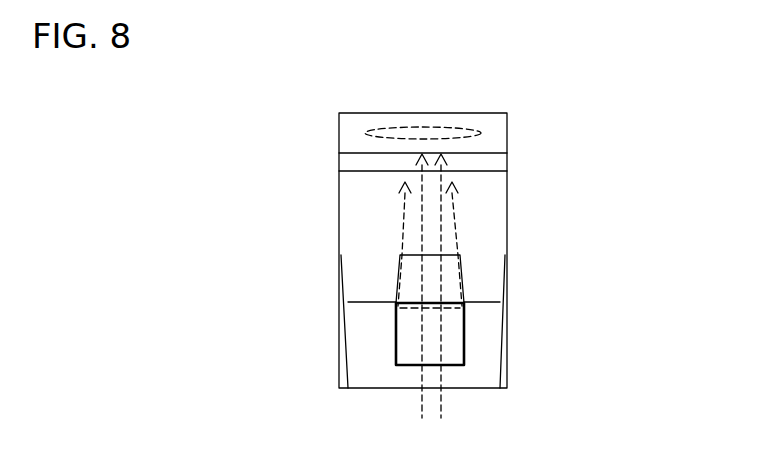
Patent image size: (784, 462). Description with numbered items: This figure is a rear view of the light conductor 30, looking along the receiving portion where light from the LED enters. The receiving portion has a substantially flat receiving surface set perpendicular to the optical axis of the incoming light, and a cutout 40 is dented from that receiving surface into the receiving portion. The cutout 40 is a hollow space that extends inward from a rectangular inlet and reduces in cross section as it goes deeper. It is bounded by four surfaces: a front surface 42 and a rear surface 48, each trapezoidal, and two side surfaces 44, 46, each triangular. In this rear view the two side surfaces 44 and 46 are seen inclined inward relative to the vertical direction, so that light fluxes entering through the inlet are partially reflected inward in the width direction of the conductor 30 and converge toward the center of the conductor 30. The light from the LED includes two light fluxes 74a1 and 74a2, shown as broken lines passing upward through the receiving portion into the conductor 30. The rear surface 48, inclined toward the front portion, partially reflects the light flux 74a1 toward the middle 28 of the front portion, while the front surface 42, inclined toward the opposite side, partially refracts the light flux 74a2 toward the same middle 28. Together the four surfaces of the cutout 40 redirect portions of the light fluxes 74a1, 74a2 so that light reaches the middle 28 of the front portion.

The middle of the front portion 28 is at (453, 130).
The conductor 30 is at (527, 113).
The cutout 40 is at (362, 240).
The front surface 42 is at (460, 276).
The side surface 44 is at (443, 312).
The side surface 46 is at (395, 322).
The rear surface 48 is at (427, 347).
The light flux 74a1 is at (419, 405).
The light flux 74a2 is at (443, 404).